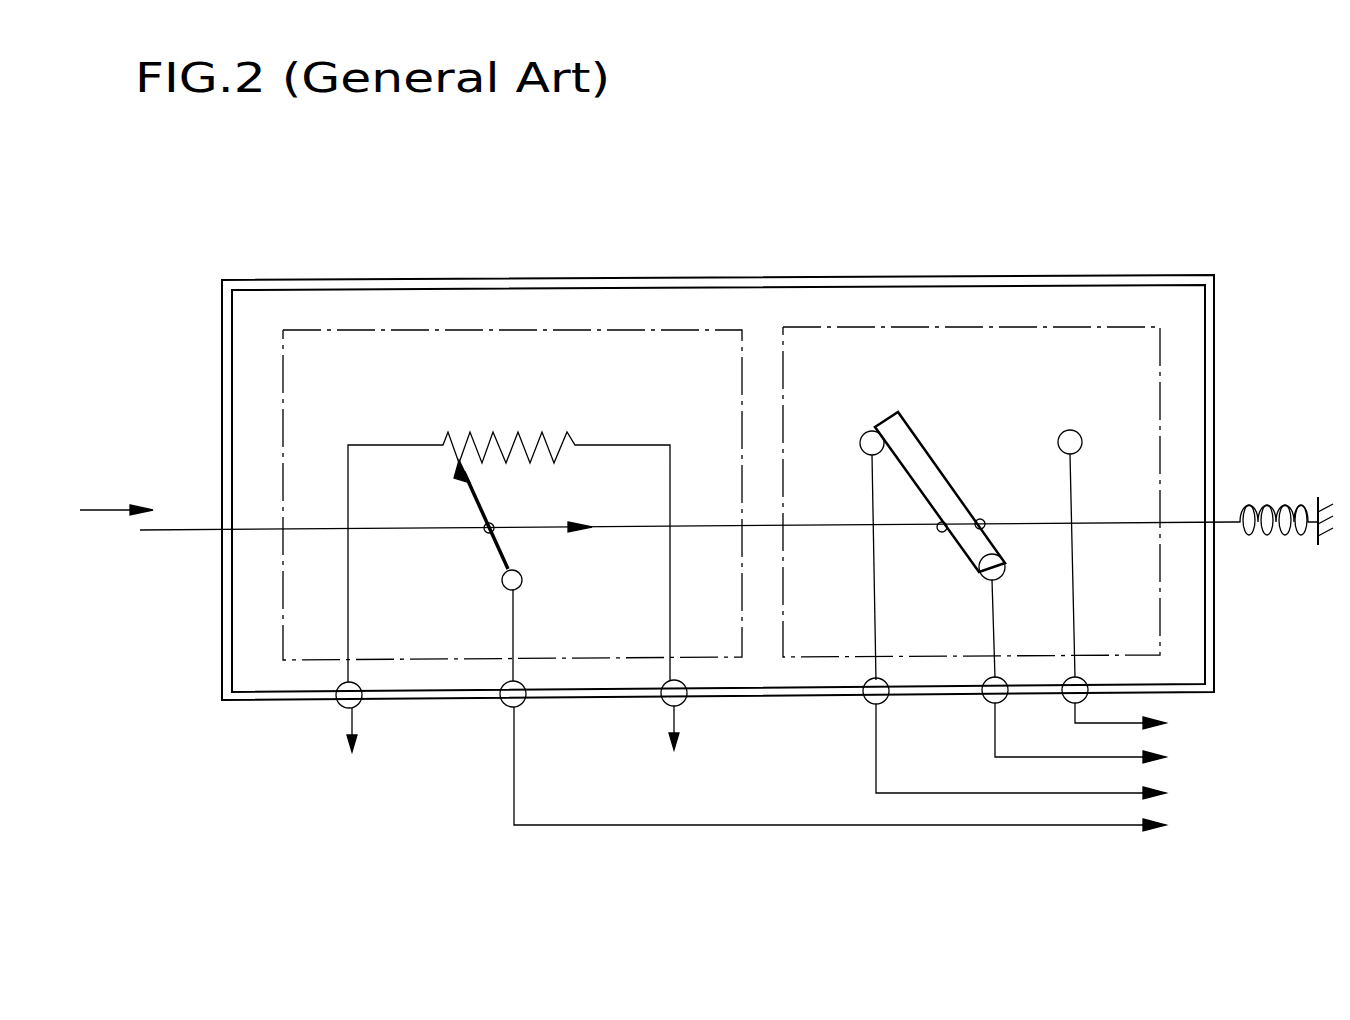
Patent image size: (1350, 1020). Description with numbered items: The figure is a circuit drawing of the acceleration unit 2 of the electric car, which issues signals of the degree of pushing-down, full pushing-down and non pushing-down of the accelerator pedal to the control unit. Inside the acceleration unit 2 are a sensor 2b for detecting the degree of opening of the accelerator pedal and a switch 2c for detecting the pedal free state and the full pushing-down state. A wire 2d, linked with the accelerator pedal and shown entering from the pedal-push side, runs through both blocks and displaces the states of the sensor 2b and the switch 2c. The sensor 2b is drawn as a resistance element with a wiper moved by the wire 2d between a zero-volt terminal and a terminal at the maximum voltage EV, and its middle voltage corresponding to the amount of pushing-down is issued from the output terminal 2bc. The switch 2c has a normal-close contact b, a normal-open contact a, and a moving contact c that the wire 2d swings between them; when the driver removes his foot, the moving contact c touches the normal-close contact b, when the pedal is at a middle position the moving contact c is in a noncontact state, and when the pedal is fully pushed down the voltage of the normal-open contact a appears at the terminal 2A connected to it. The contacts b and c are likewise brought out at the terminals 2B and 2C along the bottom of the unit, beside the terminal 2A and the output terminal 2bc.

The acceleration unit 2 is at (892, 262).
The sensor 2b is at (395, 330).
The switch 2c is at (1034, 499).
The wire 2d is at (158, 535).
The terminal 2A is at (1143, 722).
The terminal 2B is at (1044, 757).
The terminal 2C is at (1103, 740).
The output terminal 2bc is at (870, 775).
The normal-open contact a is at (1083, 552).
The normal-close contact b is at (859, 553).
The moving contact c is at (948, 480).